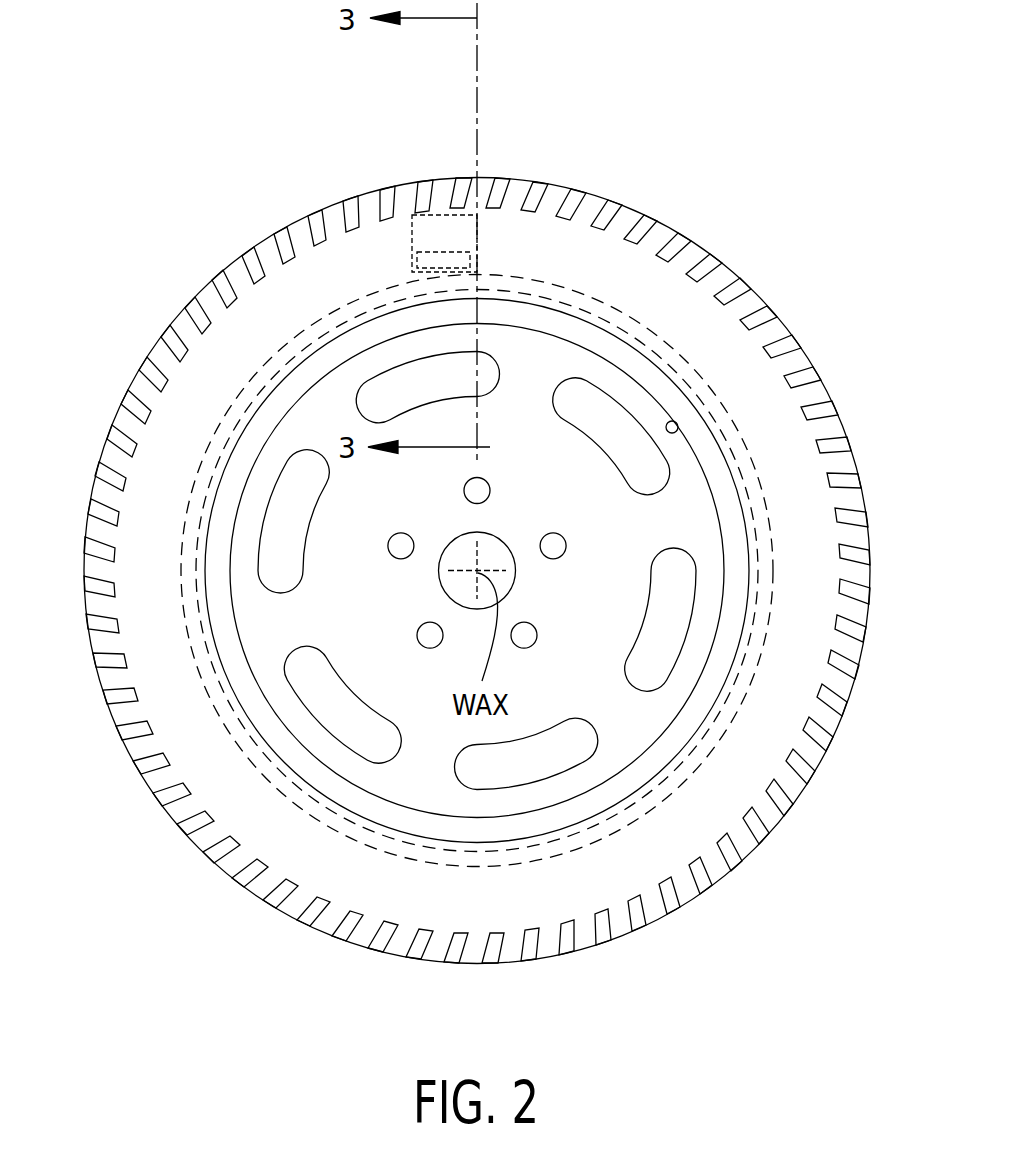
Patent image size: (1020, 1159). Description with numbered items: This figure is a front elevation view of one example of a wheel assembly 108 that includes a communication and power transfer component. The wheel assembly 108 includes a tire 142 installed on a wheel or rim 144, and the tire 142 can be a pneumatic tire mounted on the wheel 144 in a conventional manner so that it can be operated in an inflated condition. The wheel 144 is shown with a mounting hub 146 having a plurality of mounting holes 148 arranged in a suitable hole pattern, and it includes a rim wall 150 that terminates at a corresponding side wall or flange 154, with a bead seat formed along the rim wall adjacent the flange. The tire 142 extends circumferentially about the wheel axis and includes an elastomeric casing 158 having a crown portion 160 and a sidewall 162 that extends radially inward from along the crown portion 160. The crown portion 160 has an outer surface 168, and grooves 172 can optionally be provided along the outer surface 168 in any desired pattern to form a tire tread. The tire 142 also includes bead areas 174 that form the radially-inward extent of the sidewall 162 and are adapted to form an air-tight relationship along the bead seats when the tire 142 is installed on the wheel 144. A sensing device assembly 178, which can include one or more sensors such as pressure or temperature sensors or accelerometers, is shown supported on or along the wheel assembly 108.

The wheel assembly 108 is at (750, 161).
The tire 142 is at (752, 281).
The wheel or rim 144 is at (552, 312).
The mounting hub 146 is at (558, 588).
The mounting holes 148 is at (557, 531).
The rim wall 150 is at (678, 425).
The side wall or flange 154 is at (714, 460).
The elastomeric casing 158 is at (181, 347).
The crown portion 160 is at (330, 208).
The sidewall 162 is at (142, 668).
The outer surface 168 is at (293, 223).
The grooves 172 is at (206, 279).
The bead areas 174 is at (222, 735).
The sensing device assembly 178 is at (444, 205).